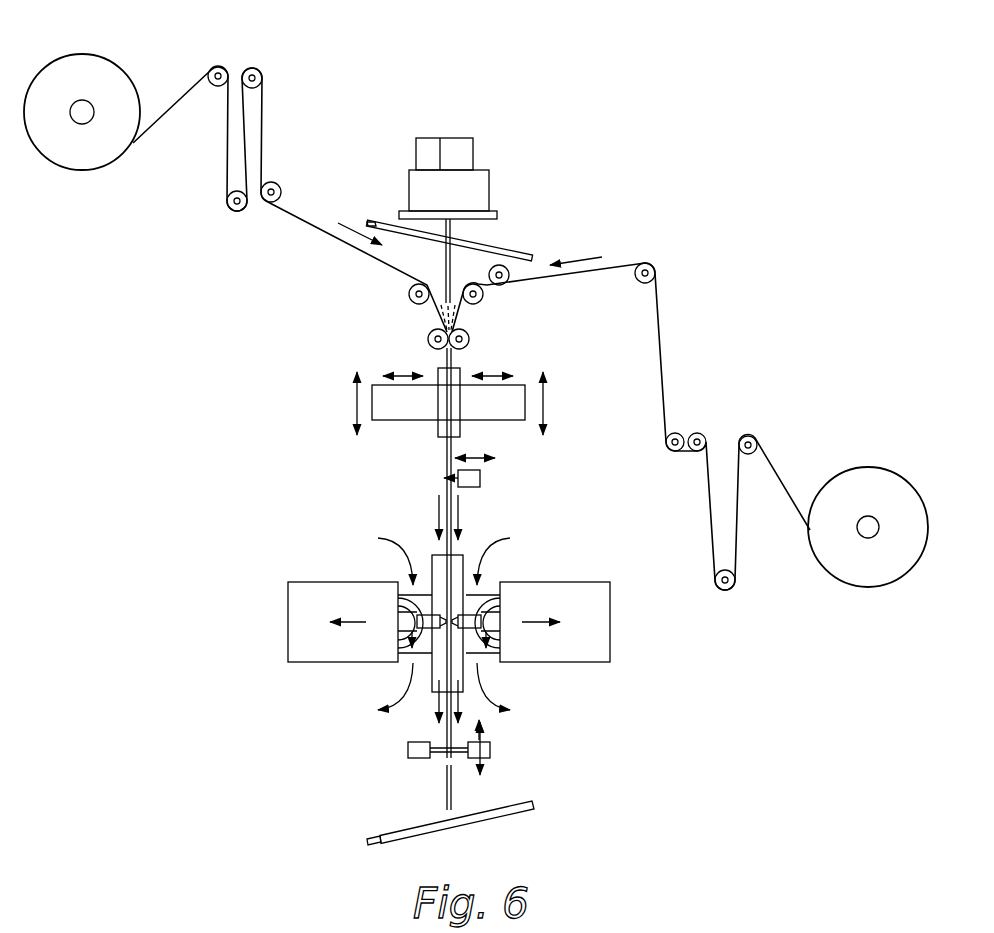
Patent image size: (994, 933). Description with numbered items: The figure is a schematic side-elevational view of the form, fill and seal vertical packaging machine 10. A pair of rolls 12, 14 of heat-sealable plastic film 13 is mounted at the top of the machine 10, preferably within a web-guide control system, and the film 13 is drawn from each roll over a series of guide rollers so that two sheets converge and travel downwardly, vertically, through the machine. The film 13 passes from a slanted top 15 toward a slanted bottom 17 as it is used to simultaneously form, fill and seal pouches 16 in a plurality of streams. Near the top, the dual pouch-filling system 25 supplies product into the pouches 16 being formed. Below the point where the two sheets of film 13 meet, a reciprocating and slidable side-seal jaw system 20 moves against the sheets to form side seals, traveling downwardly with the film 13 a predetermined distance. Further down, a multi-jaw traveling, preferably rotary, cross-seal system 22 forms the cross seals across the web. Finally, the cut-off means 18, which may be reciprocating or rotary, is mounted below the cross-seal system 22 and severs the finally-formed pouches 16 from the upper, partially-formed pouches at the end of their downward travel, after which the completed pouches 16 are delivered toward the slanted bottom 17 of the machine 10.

The vertical packaging machine 10 is at (593, 212).
The roll 12 is at (875, 468).
The film 13 is at (330, 234).
The roll 14 is at (130, 72).
The slanted top 15 is at (516, 255).
The pouch 16 is at (453, 792).
The slanted bottom 17 is at (520, 815).
The cut-off means 18 is at (397, 753).
The side-seal jaw system 20 is at (330, 397).
The cross-seal system 22 is at (252, 613).
The dual pouch-filling system 25 is at (530, 88).